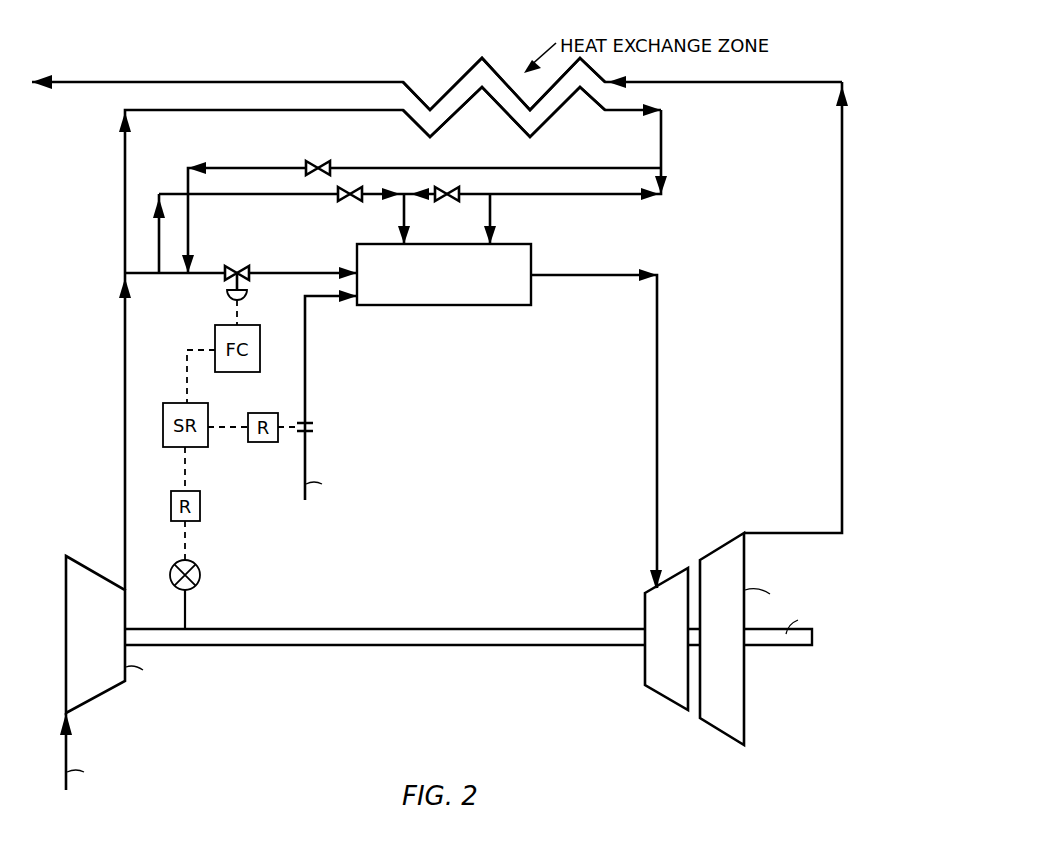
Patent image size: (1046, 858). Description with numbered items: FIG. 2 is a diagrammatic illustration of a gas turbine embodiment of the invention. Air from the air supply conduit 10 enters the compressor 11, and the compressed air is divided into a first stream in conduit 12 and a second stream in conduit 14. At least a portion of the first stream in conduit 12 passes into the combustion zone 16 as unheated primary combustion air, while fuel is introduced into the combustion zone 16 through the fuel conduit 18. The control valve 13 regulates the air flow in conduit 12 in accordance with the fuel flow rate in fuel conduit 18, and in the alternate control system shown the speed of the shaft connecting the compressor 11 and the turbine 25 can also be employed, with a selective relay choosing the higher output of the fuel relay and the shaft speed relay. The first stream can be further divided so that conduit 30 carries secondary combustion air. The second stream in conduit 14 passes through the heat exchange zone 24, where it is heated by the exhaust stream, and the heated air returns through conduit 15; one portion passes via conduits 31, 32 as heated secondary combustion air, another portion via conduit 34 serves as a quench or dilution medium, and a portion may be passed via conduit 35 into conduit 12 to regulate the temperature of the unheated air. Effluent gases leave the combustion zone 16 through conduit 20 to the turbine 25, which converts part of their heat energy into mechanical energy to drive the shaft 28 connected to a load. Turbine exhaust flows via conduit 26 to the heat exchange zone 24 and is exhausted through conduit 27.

The air supply conduit 10 is at (67, 742).
The compressor 11 is at (84, 566).
The conduit 12 is at (137, 282).
The control valve 13 is at (243, 282).
The conduit 14 is at (124, 208).
The conduit 15 is at (661, 146).
The combustion zone 16 is at (470, 305).
The fuel conduit 18 is at (306, 376).
The conduit 20 is at (658, 326).
The heat exchange zone 24 is at (450, 88).
The turbine 25 is at (745, 704).
The conduit 26 is at (841, 275).
The conduit 27 is at (66, 82).
The shaft 28 is at (770, 648).
The conduit 30 is at (368, 198).
The conduit 31 is at (478, 198).
The conduit 32 is at (406, 202).
The conduit 34 is at (492, 202).
The conduit 35 is at (352, 168).